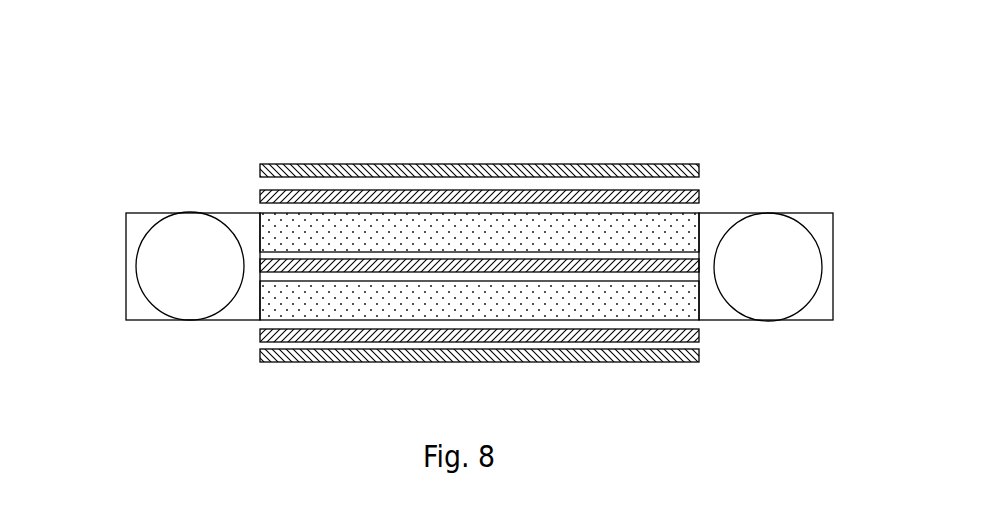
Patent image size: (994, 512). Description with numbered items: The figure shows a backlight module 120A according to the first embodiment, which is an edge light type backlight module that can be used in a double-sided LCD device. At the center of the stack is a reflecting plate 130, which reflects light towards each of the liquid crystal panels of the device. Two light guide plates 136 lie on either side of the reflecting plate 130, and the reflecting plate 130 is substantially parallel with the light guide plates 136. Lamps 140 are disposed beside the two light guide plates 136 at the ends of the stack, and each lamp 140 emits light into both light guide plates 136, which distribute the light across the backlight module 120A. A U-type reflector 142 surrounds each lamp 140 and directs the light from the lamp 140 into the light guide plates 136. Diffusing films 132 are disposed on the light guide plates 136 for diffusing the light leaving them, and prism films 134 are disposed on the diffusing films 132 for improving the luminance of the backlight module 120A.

The backlight module 120A is at (697, 92).
The reflecting plate 130 is at (307, 262).
The diffusing film 132 is at (260, 192).
The prism film 134 is at (368, 166).
The light guide plate 136 is at (512, 223).
The lamp 140 is at (160, 233).
The U-type reflector 142 is at (127, 300).